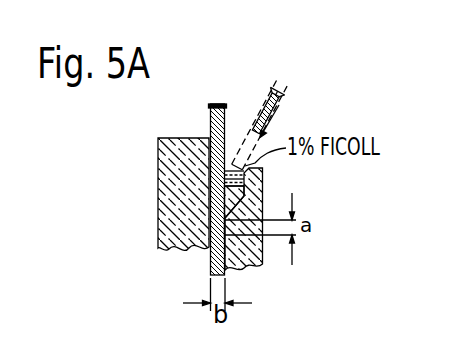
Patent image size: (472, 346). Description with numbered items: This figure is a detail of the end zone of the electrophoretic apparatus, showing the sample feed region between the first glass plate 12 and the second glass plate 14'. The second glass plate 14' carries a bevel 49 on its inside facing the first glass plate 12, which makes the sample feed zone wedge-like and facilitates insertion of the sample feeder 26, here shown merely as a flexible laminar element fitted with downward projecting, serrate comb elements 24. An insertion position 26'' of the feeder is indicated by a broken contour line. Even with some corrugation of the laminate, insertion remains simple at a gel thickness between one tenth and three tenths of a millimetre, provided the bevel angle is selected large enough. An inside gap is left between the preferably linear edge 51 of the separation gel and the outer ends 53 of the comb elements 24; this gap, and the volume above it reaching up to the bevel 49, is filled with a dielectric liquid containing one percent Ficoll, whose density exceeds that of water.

The first glass plate 12 is at (181, 244).
The second glass plate 14' is at (266, 241).
The projecting comb elements 24 is at (245, 138).
The sample feeder 26 is at (182, 189).
The insertion position 26'' is at (290, 115).
The bevel 49 is at (228, 189).
The edge of the separation gel 51 is at (211, 221).
The outer ends of the projecting comb elements 53 is at (222, 216).